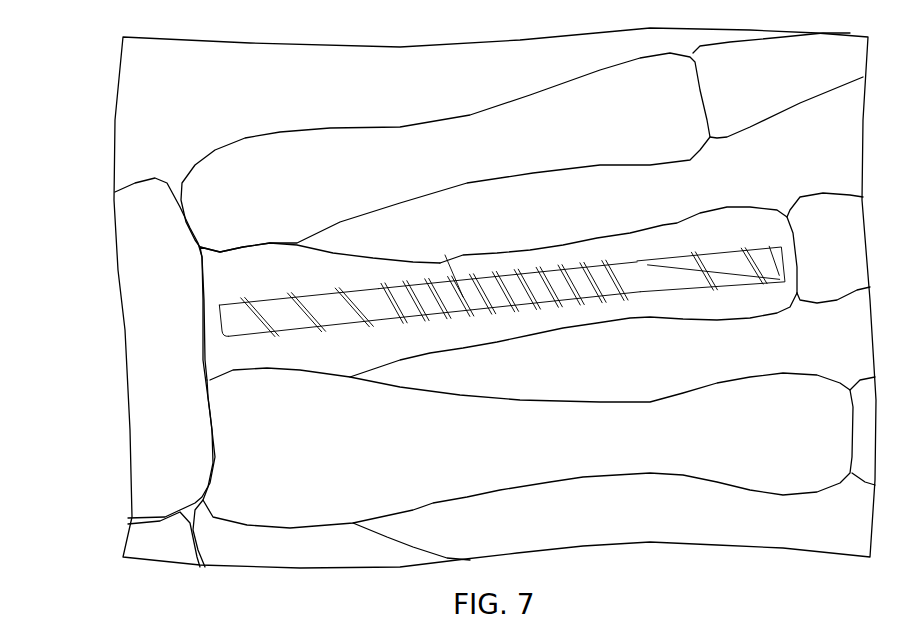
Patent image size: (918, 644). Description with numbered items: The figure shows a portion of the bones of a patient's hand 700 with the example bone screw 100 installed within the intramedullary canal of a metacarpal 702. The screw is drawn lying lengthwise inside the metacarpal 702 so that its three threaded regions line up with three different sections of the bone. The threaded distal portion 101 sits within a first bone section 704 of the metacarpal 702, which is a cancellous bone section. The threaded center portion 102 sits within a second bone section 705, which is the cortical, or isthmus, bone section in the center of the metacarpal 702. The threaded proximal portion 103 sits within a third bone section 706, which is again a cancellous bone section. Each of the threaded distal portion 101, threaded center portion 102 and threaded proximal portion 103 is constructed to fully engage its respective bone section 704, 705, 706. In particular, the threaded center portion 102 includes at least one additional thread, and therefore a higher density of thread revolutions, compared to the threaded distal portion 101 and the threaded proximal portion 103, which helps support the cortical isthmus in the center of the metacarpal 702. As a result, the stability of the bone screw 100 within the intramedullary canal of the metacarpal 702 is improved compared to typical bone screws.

The hand 700 is at (74, 93).
The bone screw 100 is at (502, 266).
The threaded distal portion 101 is at (711, 270).
The threaded center portion 102 is at (509, 291).
The threaded proximal portion 103 is at (300, 313).
The metacarpal 702 is at (562, 328).
The first bone section 704 is at (670, 237).
The second bone section 705 is at (477, 270).
The third bone section 706 is at (245, 268).